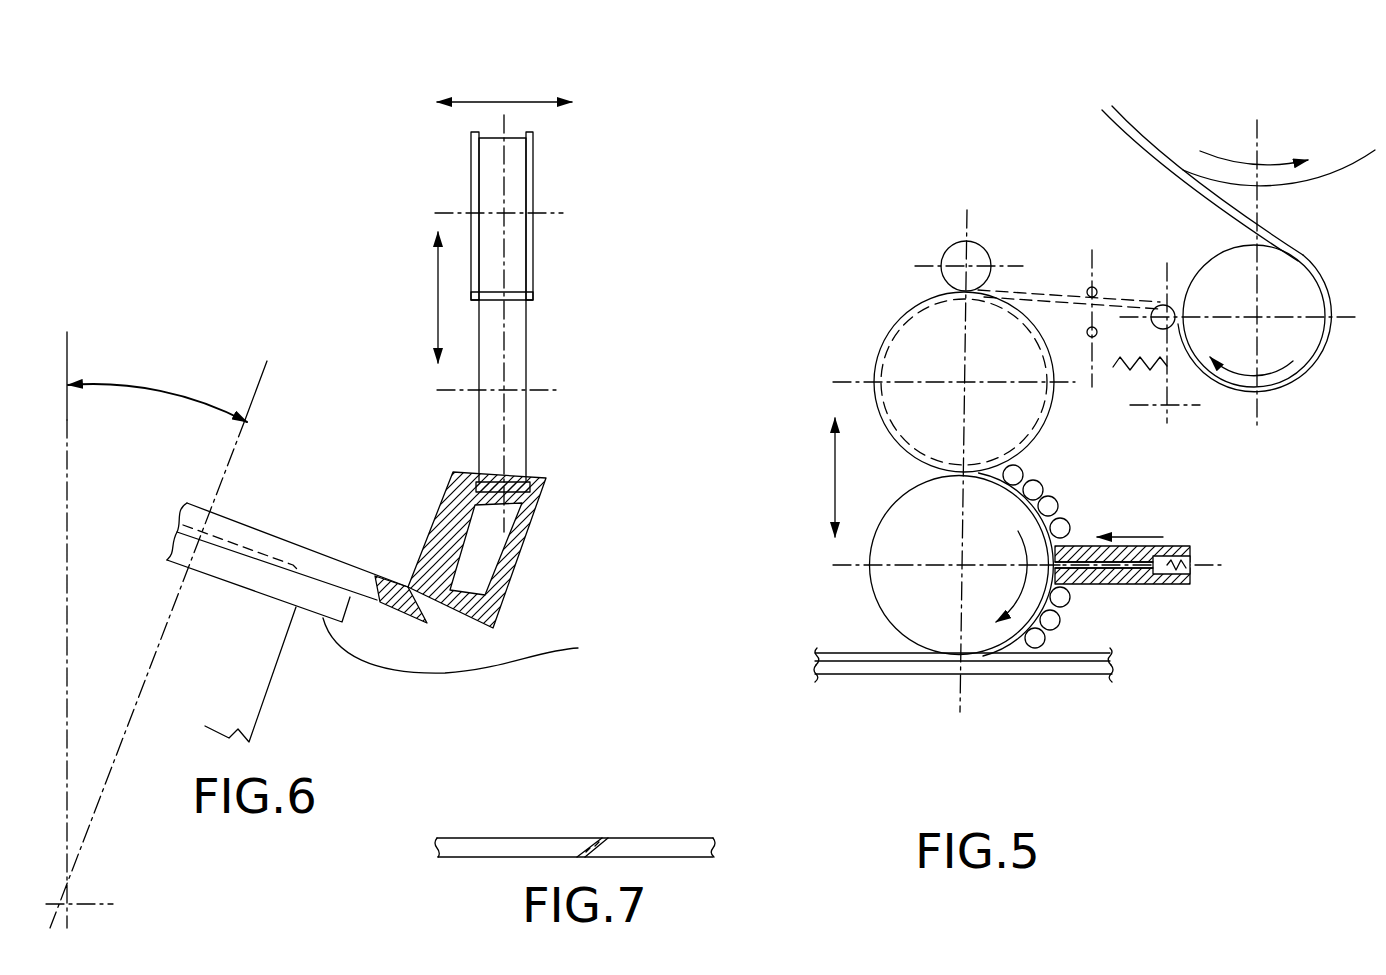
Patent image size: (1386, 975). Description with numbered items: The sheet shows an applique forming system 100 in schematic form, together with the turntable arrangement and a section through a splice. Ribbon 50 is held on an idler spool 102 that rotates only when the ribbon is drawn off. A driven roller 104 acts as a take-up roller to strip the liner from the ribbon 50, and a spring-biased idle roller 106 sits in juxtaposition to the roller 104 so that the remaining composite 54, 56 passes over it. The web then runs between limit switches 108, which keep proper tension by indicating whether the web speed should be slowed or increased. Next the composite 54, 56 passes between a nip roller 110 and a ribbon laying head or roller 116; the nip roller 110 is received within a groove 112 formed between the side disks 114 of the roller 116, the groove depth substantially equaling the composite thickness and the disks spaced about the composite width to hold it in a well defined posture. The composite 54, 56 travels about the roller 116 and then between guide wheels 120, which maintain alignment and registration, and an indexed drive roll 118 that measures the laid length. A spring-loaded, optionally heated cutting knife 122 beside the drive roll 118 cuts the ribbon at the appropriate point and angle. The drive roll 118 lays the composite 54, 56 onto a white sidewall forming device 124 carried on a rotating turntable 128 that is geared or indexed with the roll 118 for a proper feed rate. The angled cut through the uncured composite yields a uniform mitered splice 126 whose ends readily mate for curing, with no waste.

In FIG. 5, the ribbon 50 is at (1227, 210).
In FIG. 6, the composite 54 is at (439, 565).
In FIG. 5, the composite 54 is at (935, 692).
In FIG. 7, the composite 54 is at (608, 822).
In FIG. 6, the composite 56 is at (507, 478).
In FIG. 5, the composite 56 is at (880, 657).
In FIG. 7, the composite 56 is at (492, 848).
In FIG. 5, the applique forming system 100 is at (903, 247).
In FIG. 5, the spool 102 is at (1327, 148).
In FIG. 5, the driven roller 104 is at (1343, 265).
In FIG. 5, the spring-biased idle roller 106 is at (1160, 300).
In FIG. 5, the limit switches 108 is at (1088, 290).
In FIG. 5, the nip roller 110 is at (955, 262).
In FIG. 6, the groove 112 is at (515, 130).
In FIG. 6, the side disk 114 is at (535, 167).
In FIG. 6, the ribbon laying head or roller 116 is at (533, 250).
In FIG. 5, the ribbon laying head or roller 116 is at (915, 355).
In FIG. 6, the drive roll 118 is at (515, 345).
In FIG. 5, the drive roll 118 is at (885, 548).
In FIG. 5, the guide wheels 120 is at (1063, 523).
In FIG. 5, the cutting knife 122 is at (1173, 588).
In FIG. 6, the white sidewall forming device 124 is at (505, 597).
In FIG. 5, the white sidewall forming device 124 is at (1028, 667).
In FIG. 7, the splice 126 is at (617, 820).
In FIG. 6, the turntable 128 is at (578, 648).